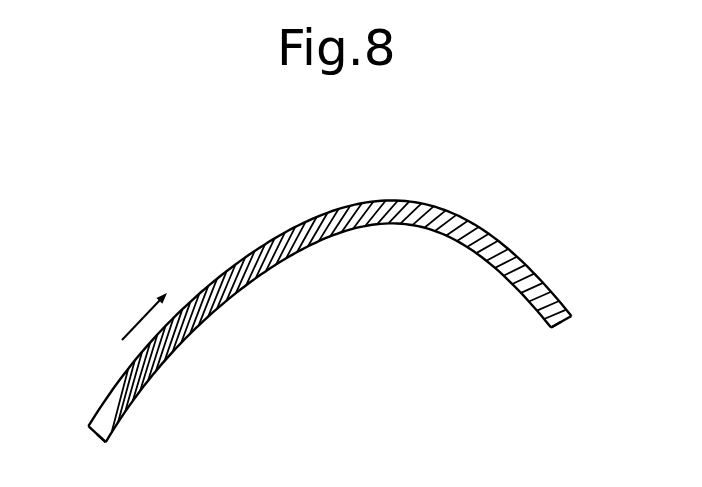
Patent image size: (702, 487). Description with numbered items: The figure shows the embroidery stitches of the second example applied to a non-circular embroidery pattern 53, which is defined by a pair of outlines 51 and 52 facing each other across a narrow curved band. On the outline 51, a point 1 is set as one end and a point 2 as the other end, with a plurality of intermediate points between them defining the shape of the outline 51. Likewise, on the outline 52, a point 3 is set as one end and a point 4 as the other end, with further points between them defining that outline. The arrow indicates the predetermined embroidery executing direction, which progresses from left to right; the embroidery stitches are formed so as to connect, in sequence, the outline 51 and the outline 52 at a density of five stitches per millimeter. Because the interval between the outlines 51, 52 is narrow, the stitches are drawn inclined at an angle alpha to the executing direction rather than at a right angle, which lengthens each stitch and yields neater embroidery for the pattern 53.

The point 1 is at (85, 429).
The point 2 is at (569, 320).
The point 3 is at (105, 449).
The point 4 is at (551, 338).
The outline 51 is at (228, 272).
The outline 52 is at (240, 295).
The non-circular embroidery pattern 53 is at (325, 312).